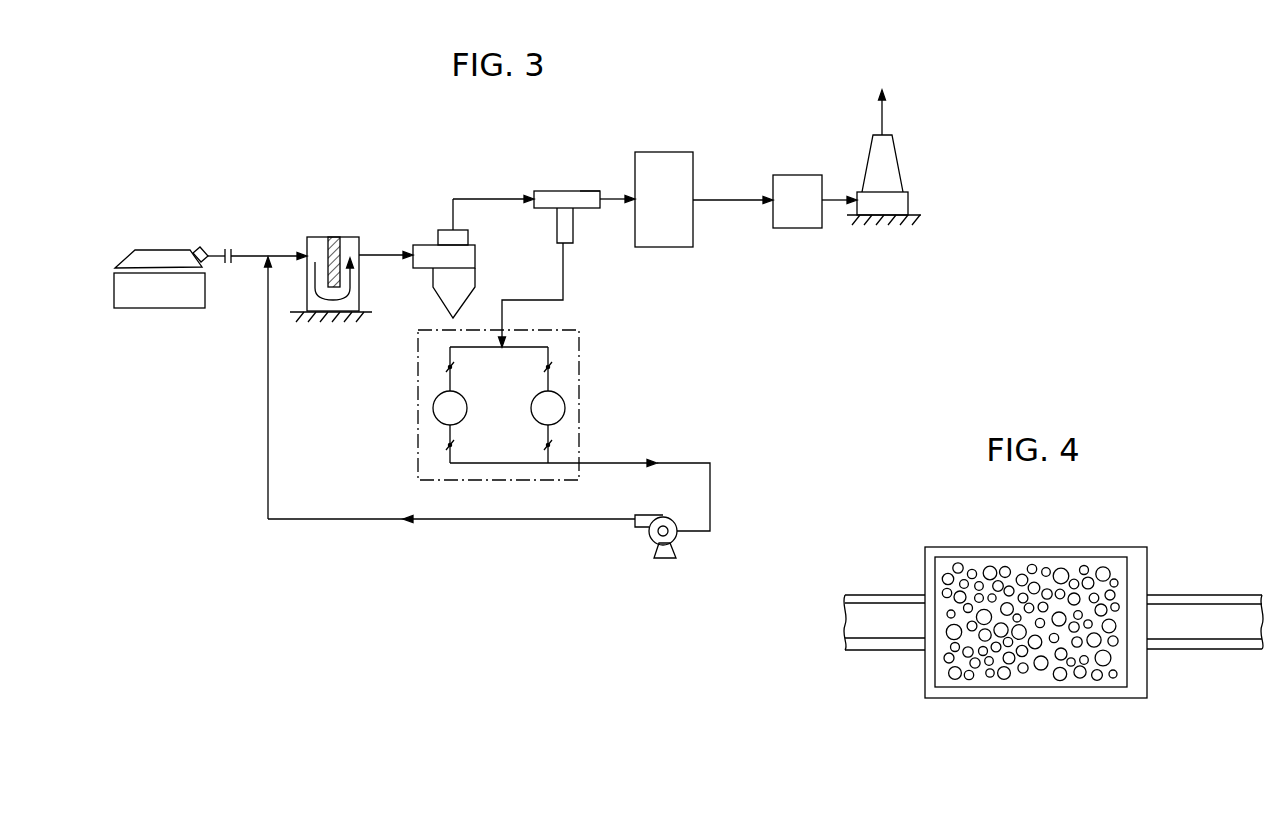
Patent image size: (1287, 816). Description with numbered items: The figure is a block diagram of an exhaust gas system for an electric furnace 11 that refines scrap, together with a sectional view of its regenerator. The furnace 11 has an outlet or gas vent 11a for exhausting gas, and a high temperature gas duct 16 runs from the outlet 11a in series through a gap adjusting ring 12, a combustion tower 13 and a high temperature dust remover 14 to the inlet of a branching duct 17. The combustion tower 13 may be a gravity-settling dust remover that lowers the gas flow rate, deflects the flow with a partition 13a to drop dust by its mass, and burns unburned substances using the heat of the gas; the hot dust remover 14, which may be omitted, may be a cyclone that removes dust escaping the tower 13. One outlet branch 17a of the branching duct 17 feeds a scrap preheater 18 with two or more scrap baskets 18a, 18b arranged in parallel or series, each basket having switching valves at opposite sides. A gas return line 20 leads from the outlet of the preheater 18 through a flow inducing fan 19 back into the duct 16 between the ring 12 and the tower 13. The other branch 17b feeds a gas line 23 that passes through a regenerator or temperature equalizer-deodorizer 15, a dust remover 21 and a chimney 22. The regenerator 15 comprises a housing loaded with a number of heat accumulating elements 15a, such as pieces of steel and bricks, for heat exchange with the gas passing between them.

In FIG. 3, the electric furnace 11 is at (159, 279).
In FIG. 3, the outlet or gas vent 11a is at (197, 248).
In FIG. 3, the gap adjusting ring 12 is at (229, 248).
In FIG. 3, the combustion tower 13 is at (363, 248).
In FIG. 3, the partition 13a is at (331, 240).
In FIG. 3, the high temperature dust remover 14 is at (450, 233).
In FIG. 3, the regenerator or temperature equalizer-deodorizer 15 is at (664, 199).
In FIG. 4, the regenerator or temperature equalizer-deodorizer 15 is at (1032, 547).
In FIG. 4, the heat accumulating elements 15a is at (1052, 660).
In FIG. 3, the high temperature gas duct or line 16 is at (248, 260).
In FIG. 3, the branching duct 17 is at (555, 195).
In FIG. 3, the outlet branch 17a is at (563, 230).
In FIG. 3, the other branch 17b is at (590, 192).
In FIG. 3, the scrap preheater 18 is at (407, 407).
In FIG. 3, the scrap basket 18a is at (455, 407).
In FIG. 3, the scrap basket 18b is at (558, 408).
In FIG. 3, the flow inducing fan 19 is at (648, 536).
In FIG. 3, the gas return line 20 is at (487, 521).
In FIG. 3, the dust remover 21 is at (803, 178).
In FIG. 3, the chimney 22 is at (888, 162).
In FIG. 3, the gas line 23 is at (722, 203).
In FIG. 4, the gas line 23 is at (1190, 598).